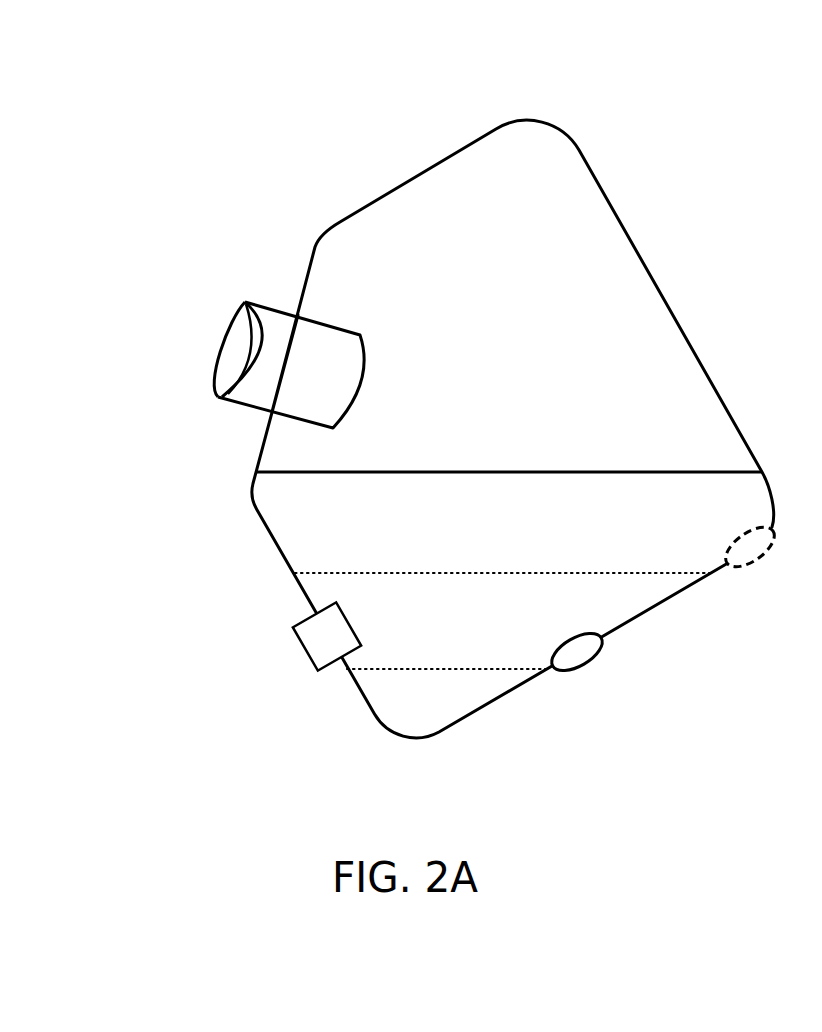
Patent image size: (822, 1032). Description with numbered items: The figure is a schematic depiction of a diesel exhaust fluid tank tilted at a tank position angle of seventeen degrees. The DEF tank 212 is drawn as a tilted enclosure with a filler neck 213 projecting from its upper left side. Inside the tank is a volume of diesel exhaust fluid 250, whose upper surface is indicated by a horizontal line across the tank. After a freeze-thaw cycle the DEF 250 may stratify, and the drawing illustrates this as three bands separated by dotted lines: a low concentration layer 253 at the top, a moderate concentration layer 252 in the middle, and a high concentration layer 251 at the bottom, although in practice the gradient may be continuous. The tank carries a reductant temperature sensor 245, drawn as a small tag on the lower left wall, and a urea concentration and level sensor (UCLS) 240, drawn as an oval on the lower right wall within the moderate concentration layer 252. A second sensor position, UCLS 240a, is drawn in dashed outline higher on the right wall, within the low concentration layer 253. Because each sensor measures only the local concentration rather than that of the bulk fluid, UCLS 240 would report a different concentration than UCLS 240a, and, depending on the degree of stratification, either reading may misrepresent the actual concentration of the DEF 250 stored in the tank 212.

The DEF tank 212 is at (538, 120).
The filler neck 213 is at (224, 302).
The diesel exhaust fluid 250 is at (494, 450).
The low concentration layer 253 is at (503, 543).
The moderate concentration layer 252 is at (448, 641).
The high concentration layer 251 is at (422, 712).
The reductant temperature sensor 245 is at (327, 636).
The urea concentration and level sensor 240 is at (588, 663).
The urea concentration and level sensor 240a is at (757, 560).